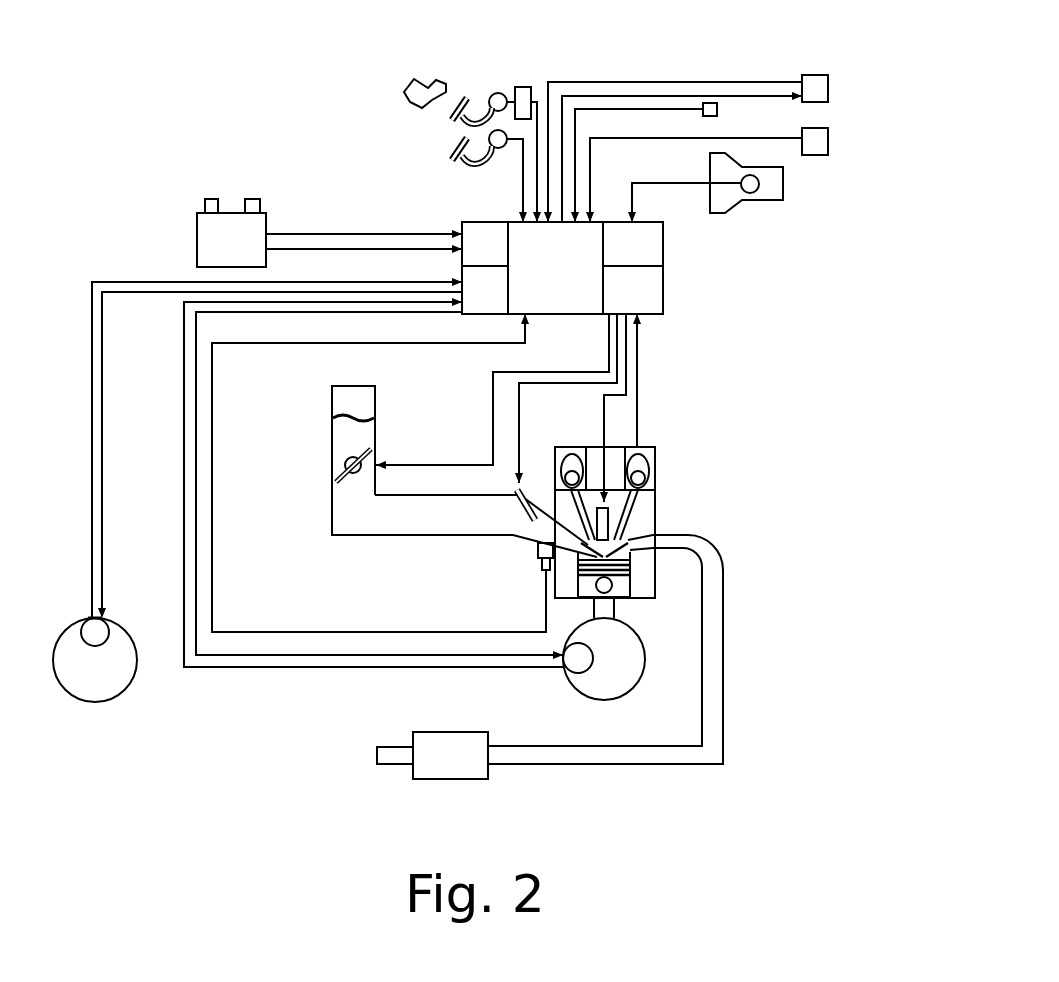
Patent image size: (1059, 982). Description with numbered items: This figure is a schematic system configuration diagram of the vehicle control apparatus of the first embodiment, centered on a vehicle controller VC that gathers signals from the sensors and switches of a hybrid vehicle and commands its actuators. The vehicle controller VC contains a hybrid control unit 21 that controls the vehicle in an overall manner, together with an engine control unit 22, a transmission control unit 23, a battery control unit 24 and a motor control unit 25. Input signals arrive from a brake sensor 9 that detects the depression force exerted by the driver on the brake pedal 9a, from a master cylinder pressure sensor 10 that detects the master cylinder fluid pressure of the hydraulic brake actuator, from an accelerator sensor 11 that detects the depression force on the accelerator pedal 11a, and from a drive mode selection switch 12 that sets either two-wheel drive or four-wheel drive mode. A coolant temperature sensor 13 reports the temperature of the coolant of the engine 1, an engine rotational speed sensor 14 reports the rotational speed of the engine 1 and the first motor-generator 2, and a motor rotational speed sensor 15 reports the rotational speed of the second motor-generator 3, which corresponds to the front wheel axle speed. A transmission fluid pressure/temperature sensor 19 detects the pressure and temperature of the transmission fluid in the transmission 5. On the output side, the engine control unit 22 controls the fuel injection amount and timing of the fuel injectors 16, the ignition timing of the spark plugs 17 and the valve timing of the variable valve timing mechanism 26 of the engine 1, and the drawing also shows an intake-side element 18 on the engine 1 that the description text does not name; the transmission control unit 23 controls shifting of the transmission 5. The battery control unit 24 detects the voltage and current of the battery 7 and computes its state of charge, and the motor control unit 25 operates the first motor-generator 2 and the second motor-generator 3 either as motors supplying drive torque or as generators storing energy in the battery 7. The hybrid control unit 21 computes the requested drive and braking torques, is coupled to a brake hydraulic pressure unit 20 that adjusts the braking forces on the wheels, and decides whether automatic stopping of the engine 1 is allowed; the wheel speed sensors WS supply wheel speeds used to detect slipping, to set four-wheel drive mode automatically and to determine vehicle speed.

The engine 1 is at (655, 520).
The first motor-generator 2 is at (628, 676).
The second motor-generator 3 is at (95, 704).
The transmission 5 is at (783, 182).
The battery 7 is at (231, 212).
The brake sensor 9 is at (492, 94).
The brake pedal 9a is at (450, 114).
The master cylinder pressure sensor 10 is at (527, 87).
The accelerator sensor 11 is at (496, 148).
The accelerator pedal 11a is at (450, 152).
The drive mode selection switch 12 is at (717, 110).
The coolant temperature sensor 13 is at (540, 568).
The engine rotational speed sensor 14 is at (560, 676).
The motor rotational speed sensor 15 is at (88, 612).
The fuel injectors 16 is at (515, 498).
The spark plugs 17 is at (612, 512).
The air intake throttle 18 is at (337, 468).
The transmission fluid pressure/temperature sensor 19 is at (752, 192).
The brake hydraulic pressure unit 20 is at (816, 75).
The hybrid control unit 21 is at (570, 305).
The engine control unit 22 is at (655, 294).
The transmission control unit 23 is at (655, 240).
The battery control unit 24 is at (482, 222).
The motor control unit 25 is at (468, 310).
The variable valve timing mechanism 26 is at (655, 452).
The vehicle controller VC is at (682, 313).
The wheel speed sensors WS is at (828, 143).